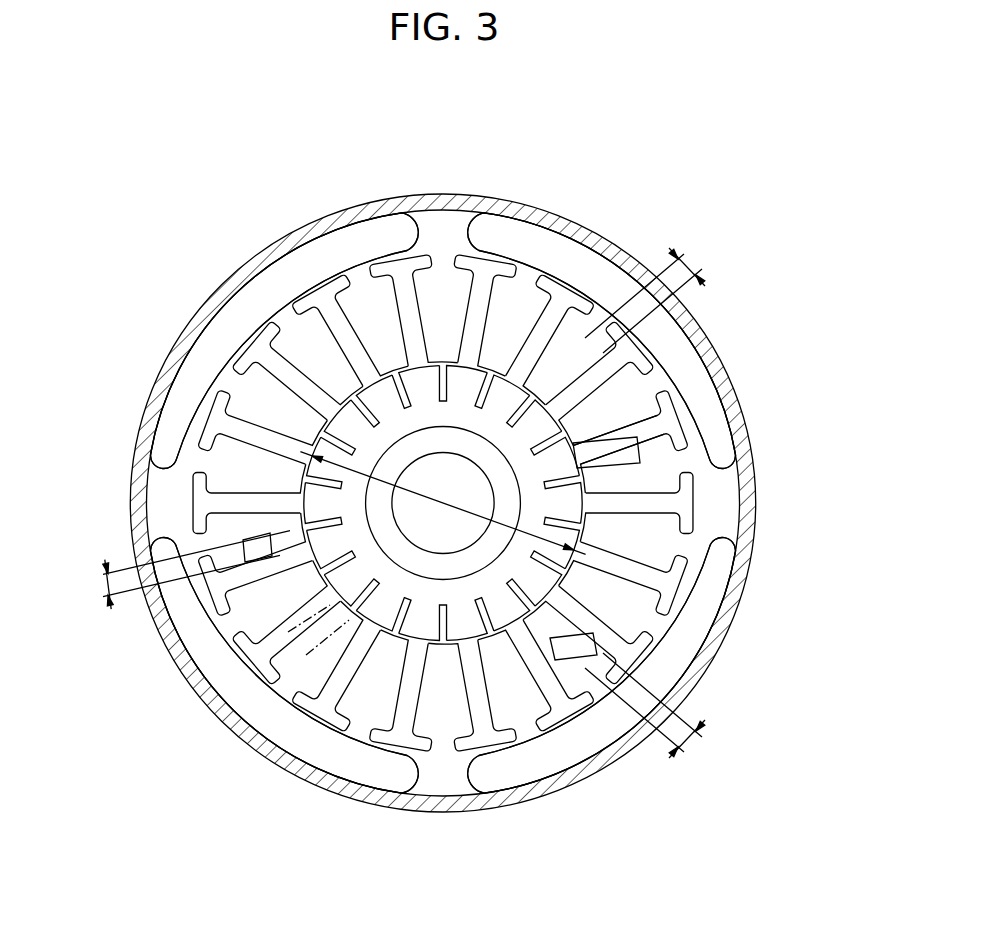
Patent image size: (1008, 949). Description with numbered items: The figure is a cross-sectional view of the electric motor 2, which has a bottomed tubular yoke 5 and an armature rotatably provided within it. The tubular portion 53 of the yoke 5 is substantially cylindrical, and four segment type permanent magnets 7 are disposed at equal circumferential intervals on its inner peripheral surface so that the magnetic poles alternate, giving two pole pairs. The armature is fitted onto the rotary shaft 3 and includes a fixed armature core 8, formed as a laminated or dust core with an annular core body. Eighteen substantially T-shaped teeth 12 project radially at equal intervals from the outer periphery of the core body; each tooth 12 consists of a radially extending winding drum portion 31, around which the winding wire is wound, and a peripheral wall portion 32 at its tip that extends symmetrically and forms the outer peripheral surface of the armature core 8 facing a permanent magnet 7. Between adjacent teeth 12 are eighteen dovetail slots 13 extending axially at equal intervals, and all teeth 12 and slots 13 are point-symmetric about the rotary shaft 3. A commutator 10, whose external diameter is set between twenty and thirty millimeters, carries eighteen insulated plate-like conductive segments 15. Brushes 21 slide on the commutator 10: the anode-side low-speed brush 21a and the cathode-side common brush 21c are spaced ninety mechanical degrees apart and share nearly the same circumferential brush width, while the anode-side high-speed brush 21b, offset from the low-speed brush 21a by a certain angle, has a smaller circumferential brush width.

The electric motor 2 is at (667, 206).
The rotary shaft 3 is at (430, 453).
The yoke 5 is at (493, 196).
The permanent magnet 7 is at (365, 236).
The armature core 8 is at (404, 255).
The commutator 10 is at (441, 646).
The tooth 12 is at (715, 441).
The slot 13 is at (528, 272).
The segment 15 is at (325, 390).
The brush 21 is at (570, 393).
The low-speed brush 21a is at (327, 648).
The high-speed brush 21b is at (640, 493).
The common brush 21c is at (550, 640).
The winding drum portion 31 is at (641, 441).
The peripheral wall portion 32 is at (674, 418).
The tubular portion 53 is at (416, 810).